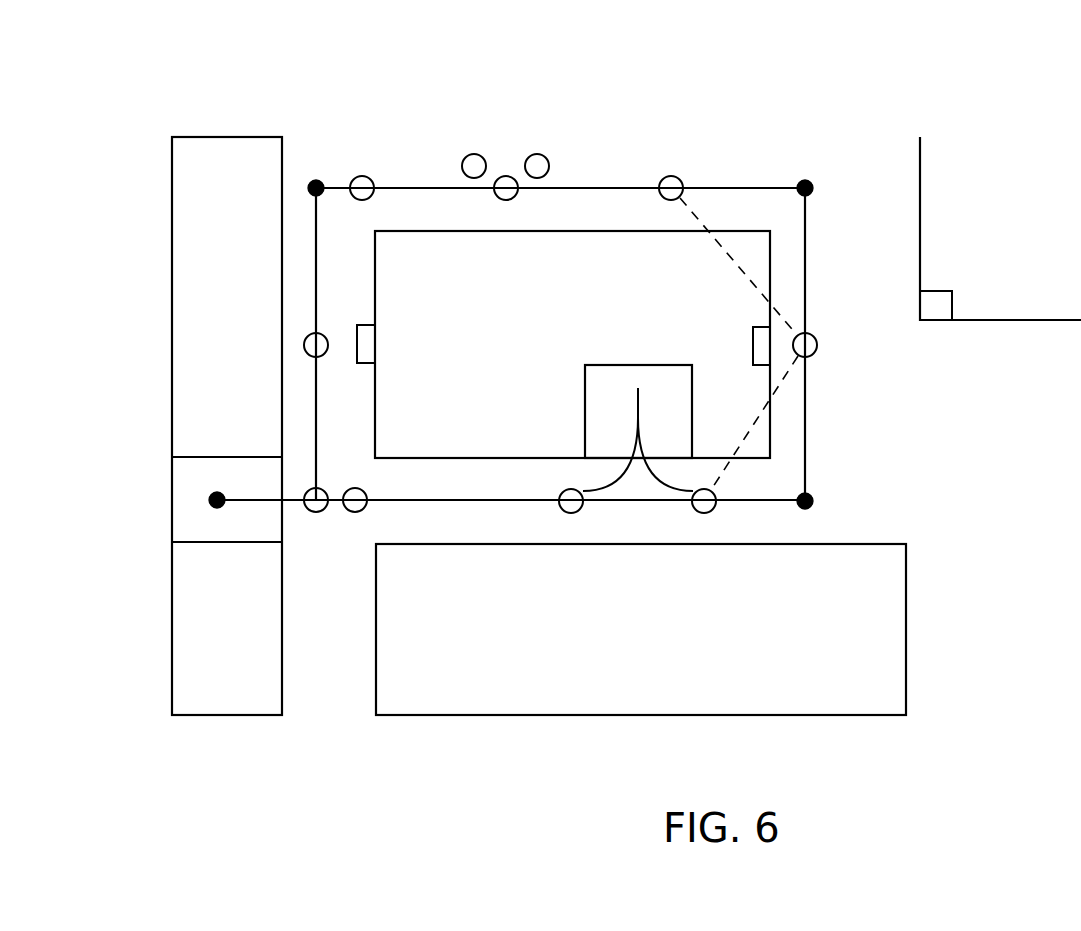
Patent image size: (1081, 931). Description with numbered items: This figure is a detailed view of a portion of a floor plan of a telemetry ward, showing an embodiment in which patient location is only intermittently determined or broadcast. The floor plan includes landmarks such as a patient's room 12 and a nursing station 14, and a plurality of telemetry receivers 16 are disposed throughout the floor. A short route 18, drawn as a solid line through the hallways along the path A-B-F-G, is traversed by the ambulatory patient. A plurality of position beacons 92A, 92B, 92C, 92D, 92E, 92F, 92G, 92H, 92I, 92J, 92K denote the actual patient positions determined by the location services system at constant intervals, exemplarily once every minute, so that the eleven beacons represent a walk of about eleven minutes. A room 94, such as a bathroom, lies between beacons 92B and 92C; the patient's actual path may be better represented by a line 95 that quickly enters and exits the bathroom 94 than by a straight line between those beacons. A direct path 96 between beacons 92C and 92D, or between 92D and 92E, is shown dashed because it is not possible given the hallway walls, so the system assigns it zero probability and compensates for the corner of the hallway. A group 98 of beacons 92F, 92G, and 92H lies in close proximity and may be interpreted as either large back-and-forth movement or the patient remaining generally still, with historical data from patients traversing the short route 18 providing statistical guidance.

The patient's room 12 is at (237, 527).
The nursing station 14 is at (989, 245).
The telemetry receiver 16 is at (367, 342).
The short route 18 is at (586, 185).
The position beacon 92A is at (354, 512).
The position beacon 92B is at (571, 513).
The position beacon 92C is at (705, 513).
The position beacon 92D is at (818, 352).
The position beacon 92E is at (674, 182).
The position beacon 92F is at (508, 200).
The position beacon 92G is at (477, 154).
The position beacon 92H is at (539, 154).
The position beacon 92I is at (364, 180).
The position beacon 92J is at (306, 340).
The position beacon 92K is at (325, 492).
The room 94 is at (616, 370).
The line 95 is at (636, 400).
The direct path 96 is at (720, 244).
The group of beacons 98 is at (507, 82).